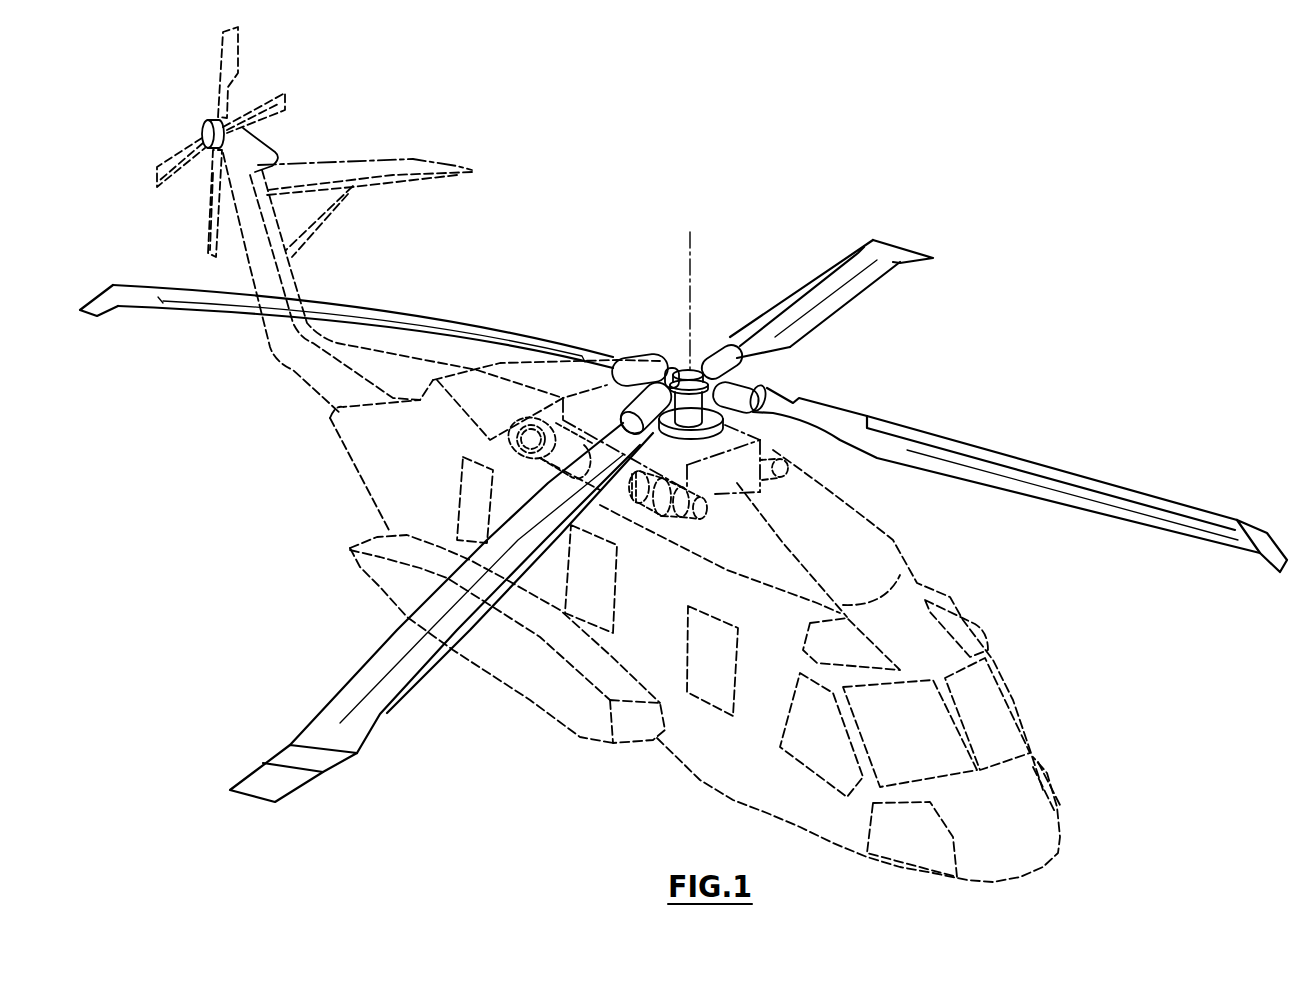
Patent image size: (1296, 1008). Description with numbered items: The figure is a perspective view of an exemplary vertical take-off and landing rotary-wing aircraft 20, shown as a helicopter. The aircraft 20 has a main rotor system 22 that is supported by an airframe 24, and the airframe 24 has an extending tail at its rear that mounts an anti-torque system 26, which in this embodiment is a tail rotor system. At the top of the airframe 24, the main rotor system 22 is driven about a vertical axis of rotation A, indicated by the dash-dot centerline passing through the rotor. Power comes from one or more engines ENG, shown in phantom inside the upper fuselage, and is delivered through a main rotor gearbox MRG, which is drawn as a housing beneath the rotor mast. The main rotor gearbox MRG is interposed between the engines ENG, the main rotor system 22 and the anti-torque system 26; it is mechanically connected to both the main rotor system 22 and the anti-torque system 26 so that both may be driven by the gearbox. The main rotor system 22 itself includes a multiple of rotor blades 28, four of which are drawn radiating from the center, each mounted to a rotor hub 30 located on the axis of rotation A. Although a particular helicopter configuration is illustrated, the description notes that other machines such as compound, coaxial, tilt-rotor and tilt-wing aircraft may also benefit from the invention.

The rotary-wing aircraft 20 is at (957, 346).
The main rotor system 22 is at (672, 348).
The airframe 24 is at (727, 758).
The anti-torque system 26 is at (268, 62).
The rotor blades 28 is at (850, 288).
The rotor hub 30 is at (740, 370).
The axis of rotation A is at (692, 273).
The engine ENG is at (510, 436).
The main rotor gearbox MRG is at (747, 490).